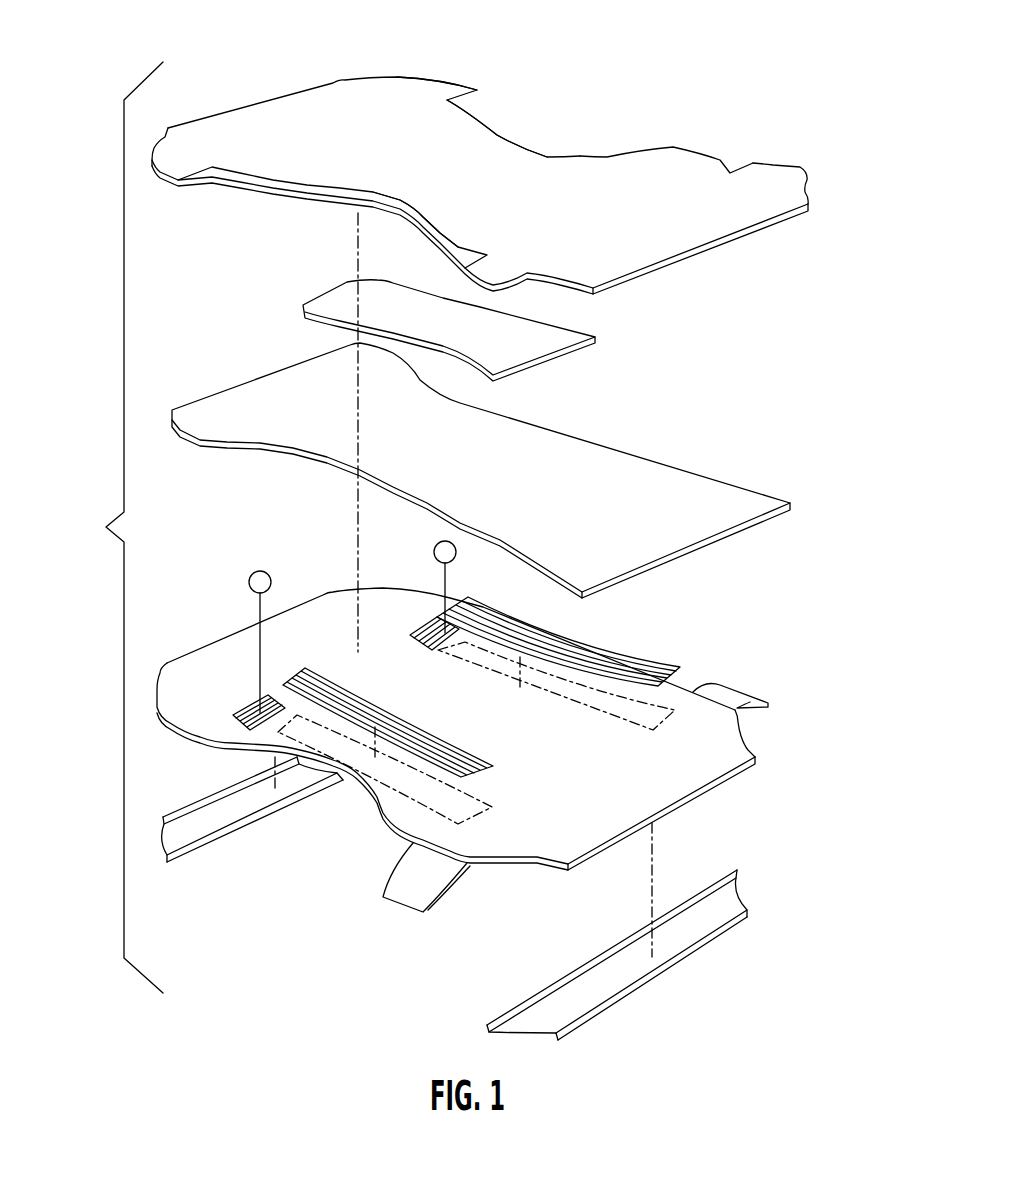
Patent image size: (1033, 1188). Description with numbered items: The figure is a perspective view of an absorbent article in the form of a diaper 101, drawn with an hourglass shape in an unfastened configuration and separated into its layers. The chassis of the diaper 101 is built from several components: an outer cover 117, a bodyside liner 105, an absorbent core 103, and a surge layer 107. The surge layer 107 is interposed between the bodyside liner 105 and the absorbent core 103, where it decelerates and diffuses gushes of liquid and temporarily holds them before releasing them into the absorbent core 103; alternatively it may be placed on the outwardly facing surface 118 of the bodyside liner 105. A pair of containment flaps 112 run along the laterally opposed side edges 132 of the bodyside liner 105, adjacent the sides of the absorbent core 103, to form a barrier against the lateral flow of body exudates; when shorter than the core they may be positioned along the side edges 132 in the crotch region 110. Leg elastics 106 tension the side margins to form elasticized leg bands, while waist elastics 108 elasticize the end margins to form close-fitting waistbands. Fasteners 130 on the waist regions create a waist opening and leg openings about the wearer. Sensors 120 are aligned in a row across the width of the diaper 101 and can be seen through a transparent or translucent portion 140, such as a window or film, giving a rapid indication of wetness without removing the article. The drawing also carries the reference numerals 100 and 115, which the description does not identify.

The sensor assembly 100 is at (111, 527).
The diaper 101 is at (618, 50).
The absorbent core 103 is at (253, 380).
The bodyside liner 105 is at (773, 165).
The leg elastics 106 is at (463, 752).
The surge layer 107 is at (570, 357).
The waist elastics 108 is at (227, 833).
The crotch region 110 is at (491, 163).
The containment flaps 112 is at (577, 153).
The base plate 115 is at (481, 729).
The outer cover 117 is at (755, 755).
The outwardly facing surface 118 is at (412, 92).
The sensors 120 is at (250, 588).
The fasteners 130 is at (727, 692).
The side edges 132 is at (520, 128).
The transparent or translucent portion 140 is at (200, 740).